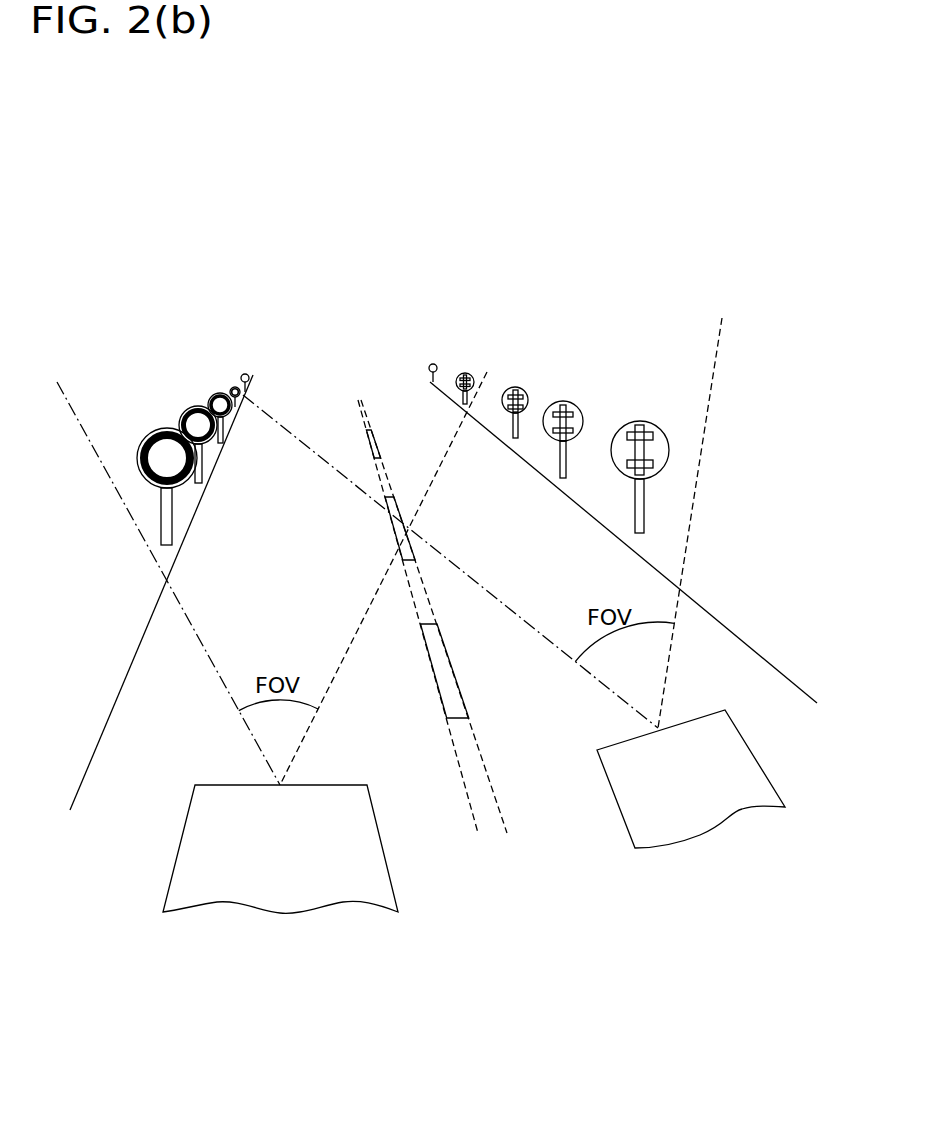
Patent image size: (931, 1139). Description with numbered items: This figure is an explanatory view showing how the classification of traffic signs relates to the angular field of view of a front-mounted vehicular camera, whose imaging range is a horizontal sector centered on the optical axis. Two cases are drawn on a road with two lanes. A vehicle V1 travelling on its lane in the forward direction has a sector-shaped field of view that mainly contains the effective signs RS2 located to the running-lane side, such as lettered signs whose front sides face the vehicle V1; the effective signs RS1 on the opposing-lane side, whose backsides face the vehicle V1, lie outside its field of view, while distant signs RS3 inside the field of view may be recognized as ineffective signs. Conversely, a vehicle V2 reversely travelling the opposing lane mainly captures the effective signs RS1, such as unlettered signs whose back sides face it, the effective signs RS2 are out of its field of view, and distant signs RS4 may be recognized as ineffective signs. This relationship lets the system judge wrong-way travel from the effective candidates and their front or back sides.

The effective signs located to the opposing-lane side RS1 is at (683, 434).
The effective signs located to the running-lane side RS2 is at (212, 386).
The ineffective signs RS3 is at (477, 377).
The ineffective signs RS4 is at (257, 369).
The vehicle travelling in the forward direction V1 is at (300, 885).
The vehicle reversely travelling the opposing lane V2 is at (682, 818).